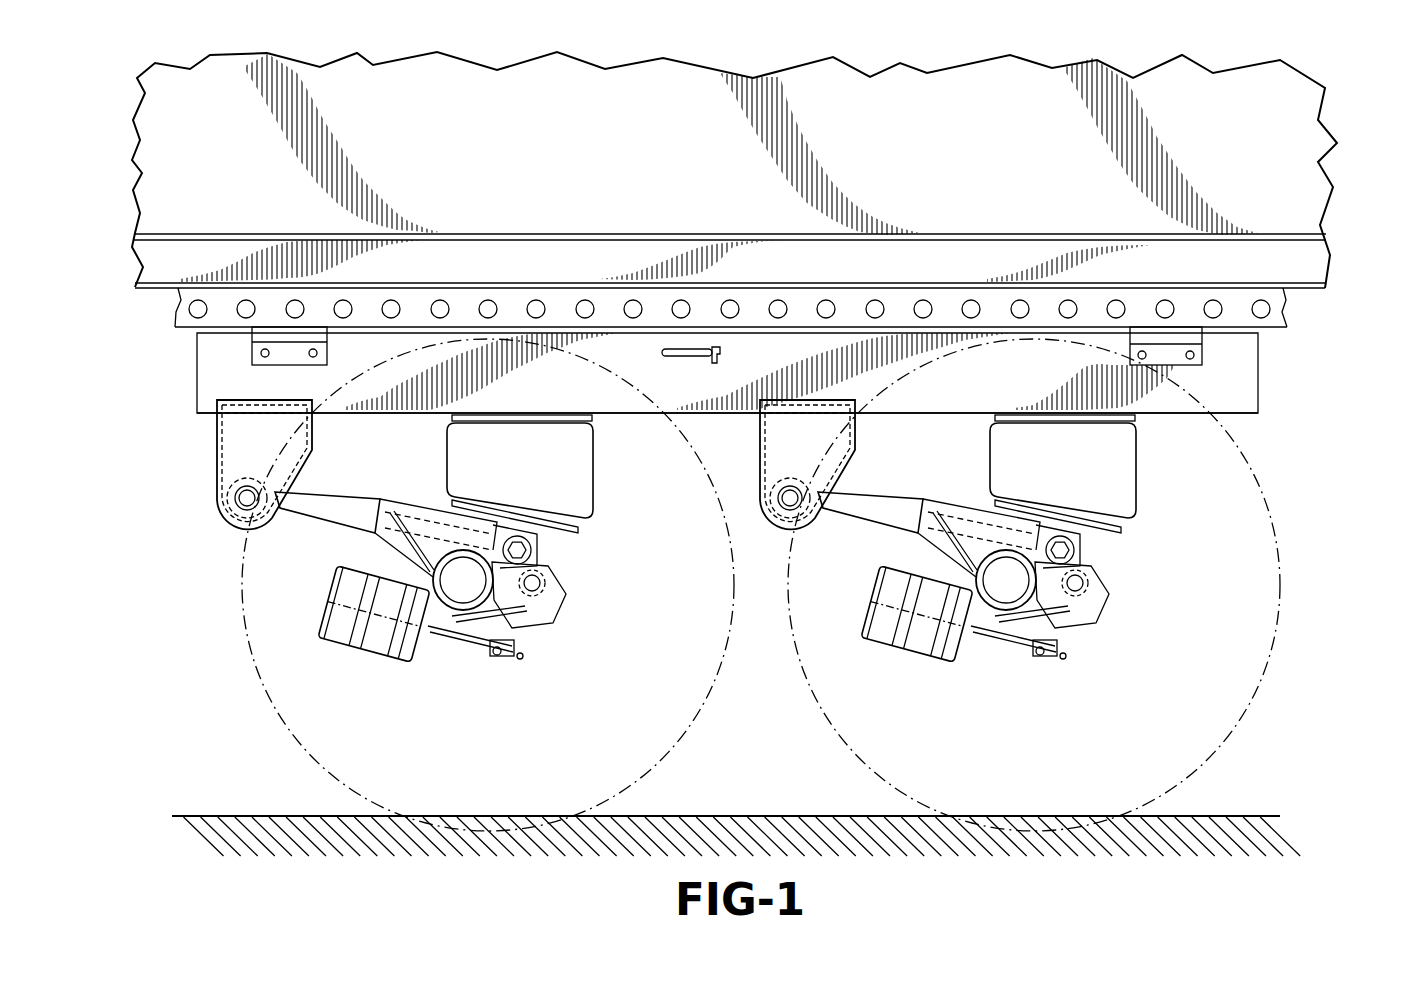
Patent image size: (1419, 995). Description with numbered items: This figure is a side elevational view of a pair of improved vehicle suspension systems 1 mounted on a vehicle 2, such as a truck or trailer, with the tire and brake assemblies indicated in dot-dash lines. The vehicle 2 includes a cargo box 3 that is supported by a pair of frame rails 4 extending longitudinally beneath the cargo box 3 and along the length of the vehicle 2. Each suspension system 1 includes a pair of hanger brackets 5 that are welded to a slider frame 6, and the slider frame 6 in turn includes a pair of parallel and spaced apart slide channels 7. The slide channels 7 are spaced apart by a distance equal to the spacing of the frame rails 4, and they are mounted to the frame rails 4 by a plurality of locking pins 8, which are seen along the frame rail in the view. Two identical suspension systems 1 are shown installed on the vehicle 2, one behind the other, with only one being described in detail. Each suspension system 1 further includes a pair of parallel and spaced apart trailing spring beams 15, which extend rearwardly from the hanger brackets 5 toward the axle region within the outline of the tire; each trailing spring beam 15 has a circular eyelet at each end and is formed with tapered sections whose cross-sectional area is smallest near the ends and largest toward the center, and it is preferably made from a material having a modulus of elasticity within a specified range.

The vehicle suspension system 1 is at (977, 531).
The vehicle 2 is at (770, 170).
The cargo box 3 is at (1310, 166).
The frame rails 4 is at (756, 253).
The hanger brackets 5 is at (779, 441).
The slider frame 6 is at (769, 370).
The slide channels 7 is at (1243, 396).
The locking pins 8 is at (246, 306).
The trailing spring beams 15 is at (893, 504).